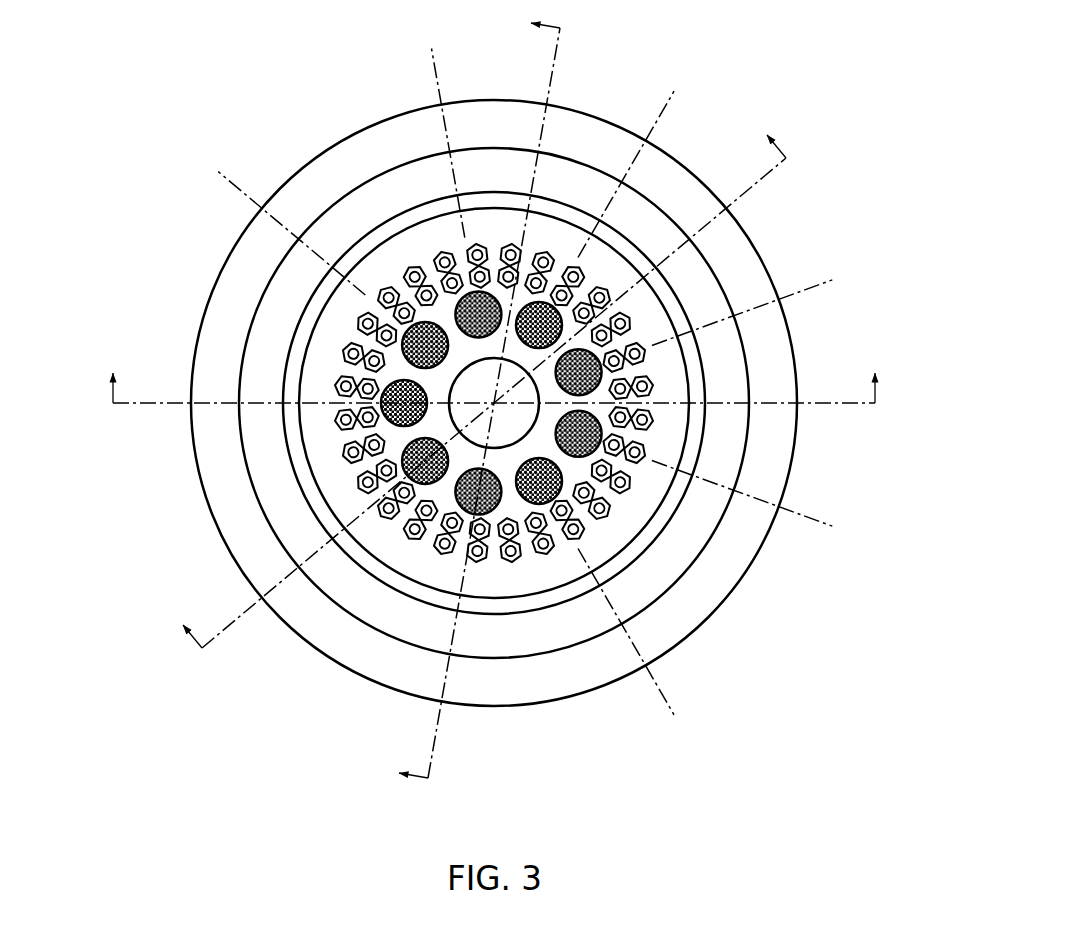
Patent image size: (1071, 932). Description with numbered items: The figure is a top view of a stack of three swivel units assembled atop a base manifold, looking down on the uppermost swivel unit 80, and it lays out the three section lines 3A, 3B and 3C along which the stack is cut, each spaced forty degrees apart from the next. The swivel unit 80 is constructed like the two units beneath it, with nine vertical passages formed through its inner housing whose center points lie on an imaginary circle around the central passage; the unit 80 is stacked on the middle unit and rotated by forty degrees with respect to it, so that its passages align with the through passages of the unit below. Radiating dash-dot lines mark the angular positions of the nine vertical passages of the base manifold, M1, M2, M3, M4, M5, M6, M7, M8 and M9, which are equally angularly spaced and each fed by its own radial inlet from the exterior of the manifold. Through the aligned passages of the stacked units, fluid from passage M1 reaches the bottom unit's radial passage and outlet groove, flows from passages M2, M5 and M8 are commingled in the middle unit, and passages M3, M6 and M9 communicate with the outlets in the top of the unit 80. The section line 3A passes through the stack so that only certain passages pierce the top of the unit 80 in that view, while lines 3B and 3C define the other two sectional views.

The swivel unit 80 is at (722, 602).
The vertical passage of base manifold M1 is at (230, 419).
The vertical passage of base manifold M2 is at (291, 578).
The vertical passage of base manifold M3 is at (433, 662).
The vertical passage of base manifold M4 is at (626, 632).
The vertical passage of base manifold M5 is at (742, 505).
The vertical passage of base manifold M6 is at (742, 304).
The vertical passage of base manifold M7 is at (626, 174).
The vertical passage of base manifold M8 is at (430, 143).
The vertical passage of base manifold M9 is at (288, 233).
The section line 3A- 3A is at (494, 373).
The section line 3B- 3B is at (469, 378).
The section line 3C- 3C is at (457, 396).